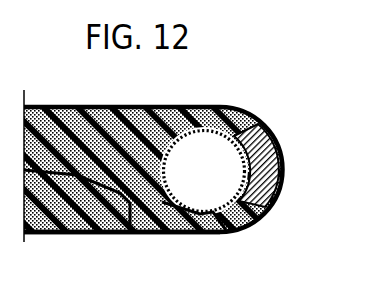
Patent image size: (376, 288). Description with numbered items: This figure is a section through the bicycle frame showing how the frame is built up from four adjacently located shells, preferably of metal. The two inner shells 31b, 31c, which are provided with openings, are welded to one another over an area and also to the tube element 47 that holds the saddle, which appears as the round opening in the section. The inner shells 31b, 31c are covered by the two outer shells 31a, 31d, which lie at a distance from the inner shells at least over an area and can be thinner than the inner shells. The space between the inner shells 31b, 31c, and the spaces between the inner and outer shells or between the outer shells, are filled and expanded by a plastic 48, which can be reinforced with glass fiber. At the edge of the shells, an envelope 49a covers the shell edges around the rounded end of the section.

The plastic 48 is at (54, 106).
The outer shell 31a is at (157, 234).
The inner shell 31b is at (132, 234).
The inner shell 31c is at (133, 106).
The outer shell 31d is at (187, 107).
The tube element 47 is at (218, 234).
The envelope 49a is at (272, 199).